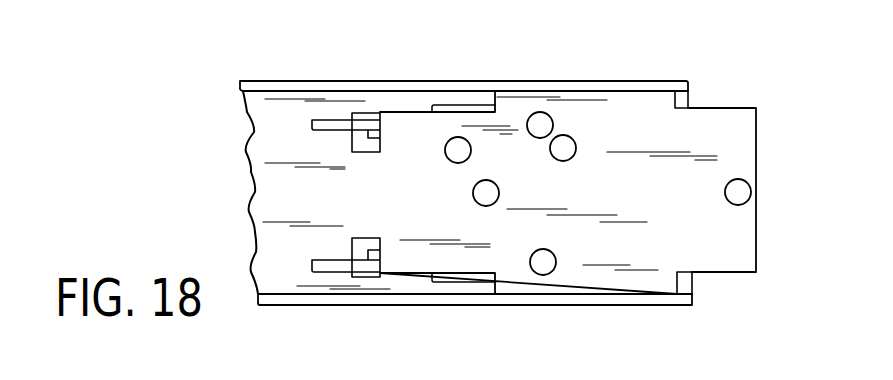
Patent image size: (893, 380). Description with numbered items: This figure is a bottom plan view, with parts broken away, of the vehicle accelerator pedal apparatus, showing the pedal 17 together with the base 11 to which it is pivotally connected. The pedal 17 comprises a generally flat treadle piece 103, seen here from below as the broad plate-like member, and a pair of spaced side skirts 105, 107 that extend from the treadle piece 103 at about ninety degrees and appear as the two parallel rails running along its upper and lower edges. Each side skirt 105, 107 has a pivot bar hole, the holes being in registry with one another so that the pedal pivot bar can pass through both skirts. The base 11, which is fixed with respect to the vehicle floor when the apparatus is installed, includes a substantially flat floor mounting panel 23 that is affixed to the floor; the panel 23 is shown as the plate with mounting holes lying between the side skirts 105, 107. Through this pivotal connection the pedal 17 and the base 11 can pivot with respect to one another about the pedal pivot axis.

The pedal 17 is at (250, 63).
The base 11 is at (720, 108).
The floor mounting panel 23 is at (708, 264).
The treadle piece 103 is at (250, 133).
The side skirt 105 is at (363, 81).
The side skirt 107 is at (407, 306).